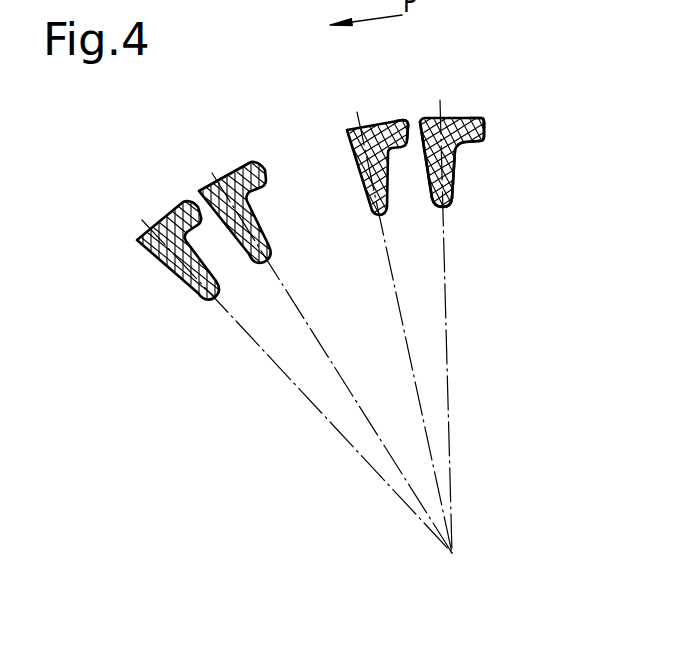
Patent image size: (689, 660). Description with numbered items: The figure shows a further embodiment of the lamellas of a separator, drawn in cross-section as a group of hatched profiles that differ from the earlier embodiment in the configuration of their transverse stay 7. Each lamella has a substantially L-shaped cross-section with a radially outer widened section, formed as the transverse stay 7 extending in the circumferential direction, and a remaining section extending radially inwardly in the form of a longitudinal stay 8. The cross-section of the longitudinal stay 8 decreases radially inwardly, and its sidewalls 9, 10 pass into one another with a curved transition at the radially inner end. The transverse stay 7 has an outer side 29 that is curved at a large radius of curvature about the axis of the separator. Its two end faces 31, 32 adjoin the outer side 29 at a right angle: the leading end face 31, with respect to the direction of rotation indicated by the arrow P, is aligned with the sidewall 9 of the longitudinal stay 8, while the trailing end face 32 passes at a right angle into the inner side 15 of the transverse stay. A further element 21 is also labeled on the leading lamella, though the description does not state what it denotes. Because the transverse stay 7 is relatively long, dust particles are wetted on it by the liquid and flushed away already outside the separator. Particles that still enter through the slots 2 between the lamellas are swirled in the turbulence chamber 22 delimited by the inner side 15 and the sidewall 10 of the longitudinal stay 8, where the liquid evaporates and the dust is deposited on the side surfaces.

The slot 2 is at (220, 230).
The turbulence chamber 22 is at (247, 195).
The retaining strip 21 is at (379, 124).
The leading end face 31 is at (411, 121).
The outer side 29 is at (479, 135).
The transverse stay 7 is at (463, 118).
The trailing end face 32 is at (485, 124).
The inner side 15 is at (463, 143).
The longitudinal stay 8 is at (448, 174).
The sidewall 10 is at (451, 195).
The sidewall 9 is at (428, 153).